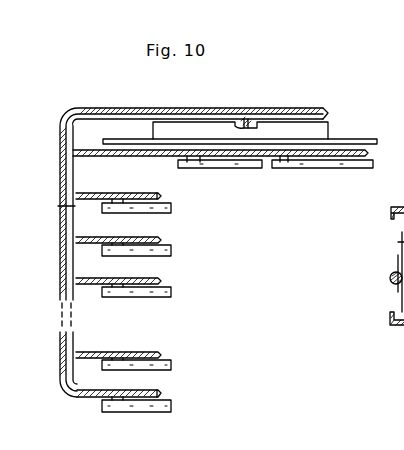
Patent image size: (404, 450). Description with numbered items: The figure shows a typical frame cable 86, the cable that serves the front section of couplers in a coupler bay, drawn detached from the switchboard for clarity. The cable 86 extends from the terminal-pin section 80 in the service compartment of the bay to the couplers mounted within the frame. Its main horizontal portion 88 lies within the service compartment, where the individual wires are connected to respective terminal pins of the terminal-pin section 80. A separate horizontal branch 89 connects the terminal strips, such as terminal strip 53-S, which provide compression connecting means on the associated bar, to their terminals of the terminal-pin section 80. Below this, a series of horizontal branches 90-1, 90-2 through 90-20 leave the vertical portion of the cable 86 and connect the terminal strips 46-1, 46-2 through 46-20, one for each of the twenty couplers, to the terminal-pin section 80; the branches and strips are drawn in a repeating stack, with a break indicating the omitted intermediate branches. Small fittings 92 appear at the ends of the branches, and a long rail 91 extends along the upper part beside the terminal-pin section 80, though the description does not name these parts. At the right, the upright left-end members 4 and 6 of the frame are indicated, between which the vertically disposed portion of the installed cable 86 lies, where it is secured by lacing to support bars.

The main horizontal portion 88 is at (118, 110).
The terminal-pin section 80 is at (329, 131).
The rail conductor 91 is at (368, 156).
The horizontal branch 89 is at (173, 156).
The terminal strip 53-S is at (300, 169).
The horizontal branch 90-1 is at (100, 193).
The horizontal branch 90-2 is at (100, 237).
The horizontal branch 90-20 is at (97, 398).
The terminal strip 46-1 is at (165, 213).
The terminal strip 46-2 is at (170, 256).
The terminal strip 46-20 is at (172, 409).
The terminal 92 is at (161, 201).
The frame cable 86 is at (60, 206).
The principal rear member 6 is at (390, 212).
The principal front member 4 is at (390, 318).